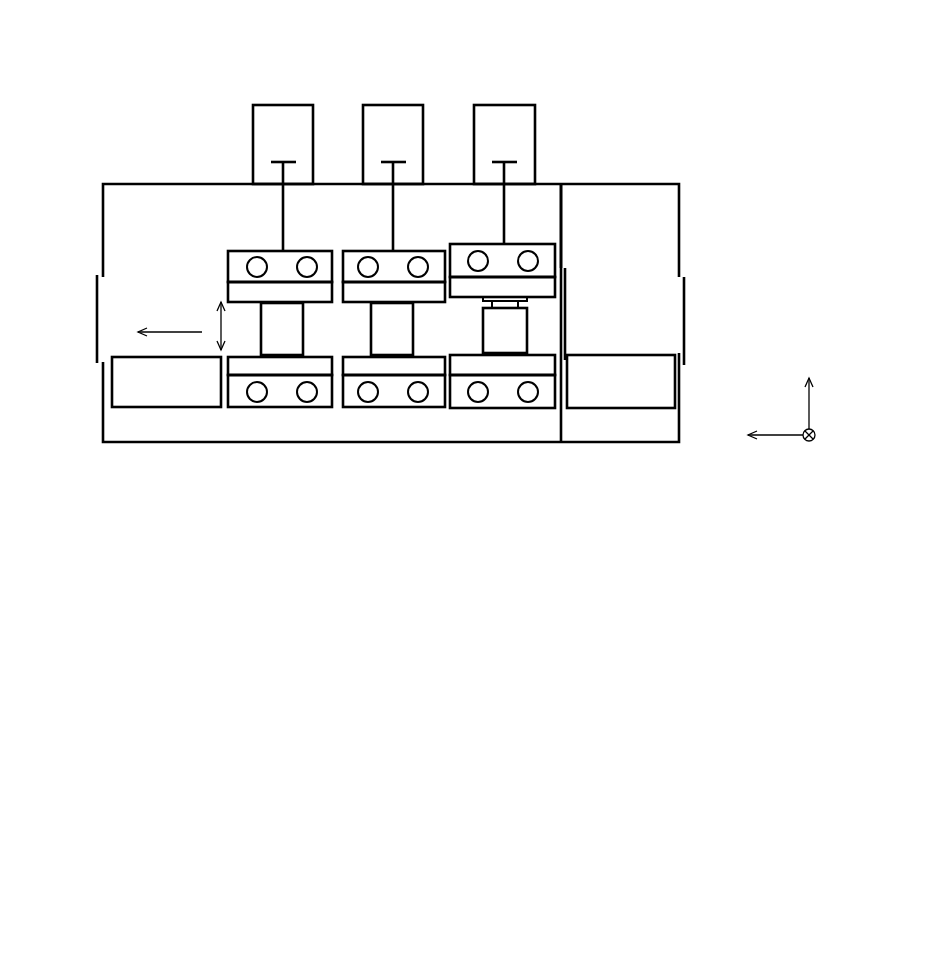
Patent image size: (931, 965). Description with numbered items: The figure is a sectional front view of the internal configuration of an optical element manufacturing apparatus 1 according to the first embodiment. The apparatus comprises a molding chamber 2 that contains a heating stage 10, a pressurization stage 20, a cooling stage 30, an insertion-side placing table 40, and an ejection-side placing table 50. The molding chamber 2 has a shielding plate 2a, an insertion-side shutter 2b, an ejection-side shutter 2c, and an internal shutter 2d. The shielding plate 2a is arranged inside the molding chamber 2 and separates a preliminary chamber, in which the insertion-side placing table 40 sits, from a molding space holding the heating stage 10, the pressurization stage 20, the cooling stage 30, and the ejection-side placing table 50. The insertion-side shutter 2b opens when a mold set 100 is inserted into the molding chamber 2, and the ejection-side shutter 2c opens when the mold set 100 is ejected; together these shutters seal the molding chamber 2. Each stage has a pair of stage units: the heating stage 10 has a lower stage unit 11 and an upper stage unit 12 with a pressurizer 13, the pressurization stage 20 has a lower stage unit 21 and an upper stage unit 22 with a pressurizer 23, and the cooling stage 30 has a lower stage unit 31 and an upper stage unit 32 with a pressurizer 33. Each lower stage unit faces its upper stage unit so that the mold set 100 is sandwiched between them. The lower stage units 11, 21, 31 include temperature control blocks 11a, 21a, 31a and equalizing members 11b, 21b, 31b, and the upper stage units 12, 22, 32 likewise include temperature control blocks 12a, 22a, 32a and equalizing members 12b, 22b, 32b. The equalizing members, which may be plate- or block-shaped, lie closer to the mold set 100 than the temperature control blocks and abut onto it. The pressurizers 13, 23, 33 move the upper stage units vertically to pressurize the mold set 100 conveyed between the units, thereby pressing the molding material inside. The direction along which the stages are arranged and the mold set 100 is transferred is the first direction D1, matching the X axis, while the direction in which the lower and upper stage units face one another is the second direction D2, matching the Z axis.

The optical element manufacturing apparatus 1 is at (117, 118).
The molding chamber 2 is at (101, 215).
The shielding plate 2a is at (562, 257).
The insertion-side shutter 2b is at (684, 305).
The ejection-side shutter 2c is at (97, 313).
The internal shutter 2d is at (565, 288).
The heating stage 10 is at (453, 96).
The lower stage unit 11 is at (513, 412).
The temperature control block 11a is at (532, 408).
The equalizing member 11b is at (497, 370).
The upper stage unit 12 is at (537, 243).
The temperature control block 12a is at (559, 258).
The equalizing member 12b is at (513, 275).
The pressurizer 13 is at (521, 105).
The pressurization stage 20 is at (343, 96).
The lower stage unit 21 is at (403, 412).
The temperature control block 21a is at (420, 408).
The equalizing member 21b is at (388, 370).
The upper stage unit 22 is at (405, 250).
The temperature control block 22a is at (432, 250).
The equalizing member 22b is at (347, 283).
The pressurizer 23 is at (414, 105).
The cooling stage 30 is at (233, 96).
The lower stage unit 31 is at (292, 412).
The temperature control block 31a is at (310, 408).
The equalizing member 31b is at (278, 370).
The upper stage unit 32 is at (292, 250).
The temperature control block 32a is at (243, 255).
The equalizing member 32b is at (237, 288).
The pressurizer 33 is at (306, 105).
The insertion-side placing table 40 is at (625, 403).
The ejection-side placing table 50 is at (131, 403).
The mold set 100 is at (528, 327).
The first direction D1 is at (180, 333).
The second direction D2 is at (221, 338).